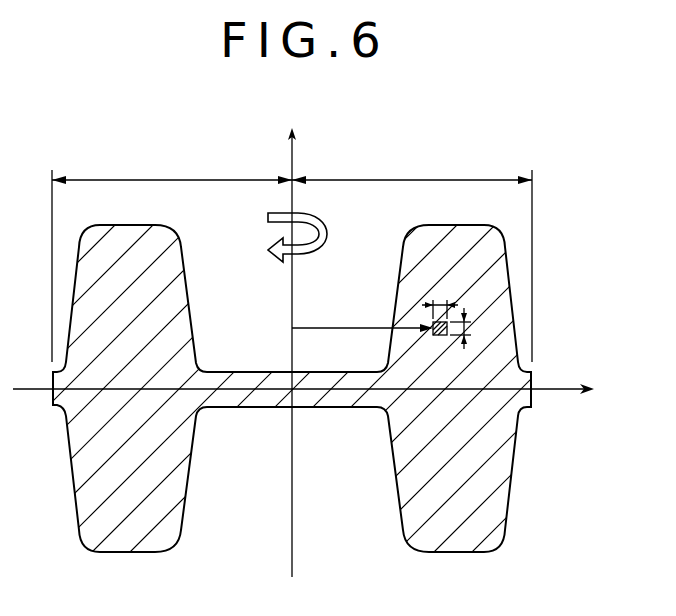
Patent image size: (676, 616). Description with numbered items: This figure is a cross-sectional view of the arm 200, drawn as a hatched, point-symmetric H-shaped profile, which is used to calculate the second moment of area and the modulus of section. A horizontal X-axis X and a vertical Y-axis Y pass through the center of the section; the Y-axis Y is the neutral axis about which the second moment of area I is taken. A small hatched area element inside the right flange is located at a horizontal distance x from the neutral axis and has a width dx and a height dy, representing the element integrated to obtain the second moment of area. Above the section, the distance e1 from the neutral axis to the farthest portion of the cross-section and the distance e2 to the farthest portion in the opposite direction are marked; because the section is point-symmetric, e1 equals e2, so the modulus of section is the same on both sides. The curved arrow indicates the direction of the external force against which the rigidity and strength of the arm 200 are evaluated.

The arm 200 is at (246, 327).
The distance e1 is at (172, 259).
The distance e2 is at (412, 259).
The x coordinate x is at (362, 316).
The width dx of area element dx is at (440, 296).
The height dy of area element dy is at (474, 328).
The X-axis X is at (312, 389).
The Y-axis Y is at (291, 338).